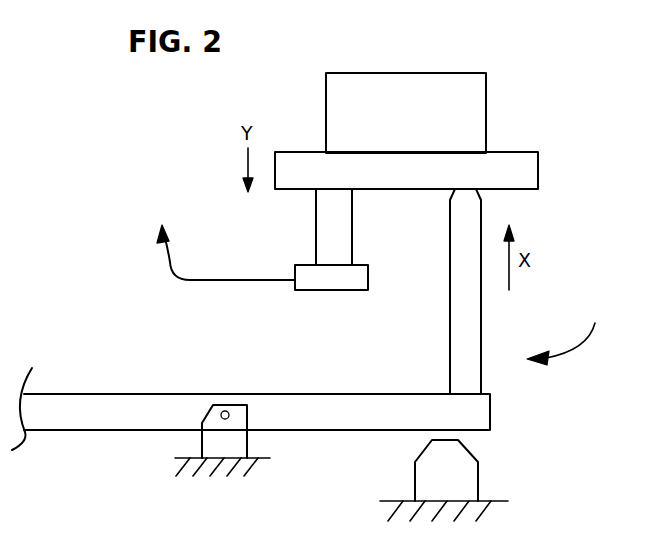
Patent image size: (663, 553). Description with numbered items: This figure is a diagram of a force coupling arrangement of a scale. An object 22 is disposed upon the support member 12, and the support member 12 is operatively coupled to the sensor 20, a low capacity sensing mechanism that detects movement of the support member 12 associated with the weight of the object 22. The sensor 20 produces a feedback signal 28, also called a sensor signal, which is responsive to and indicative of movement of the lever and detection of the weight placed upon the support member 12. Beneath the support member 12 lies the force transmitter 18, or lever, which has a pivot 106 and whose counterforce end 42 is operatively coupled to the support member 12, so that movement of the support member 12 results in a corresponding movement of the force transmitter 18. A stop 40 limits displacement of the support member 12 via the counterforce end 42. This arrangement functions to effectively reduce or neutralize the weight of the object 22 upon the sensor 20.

The support member 12 is at (538, 160).
The force transmitter 18 is at (75, 431).
The sensor 20 is at (331, 290).
The object 22 is at (418, 126).
The feedback signal 28 is at (172, 256).
The stop 40 is at (478, 478).
The counterforce end 42 is at (567, 329).
The pivot 106 is at (222, 405).